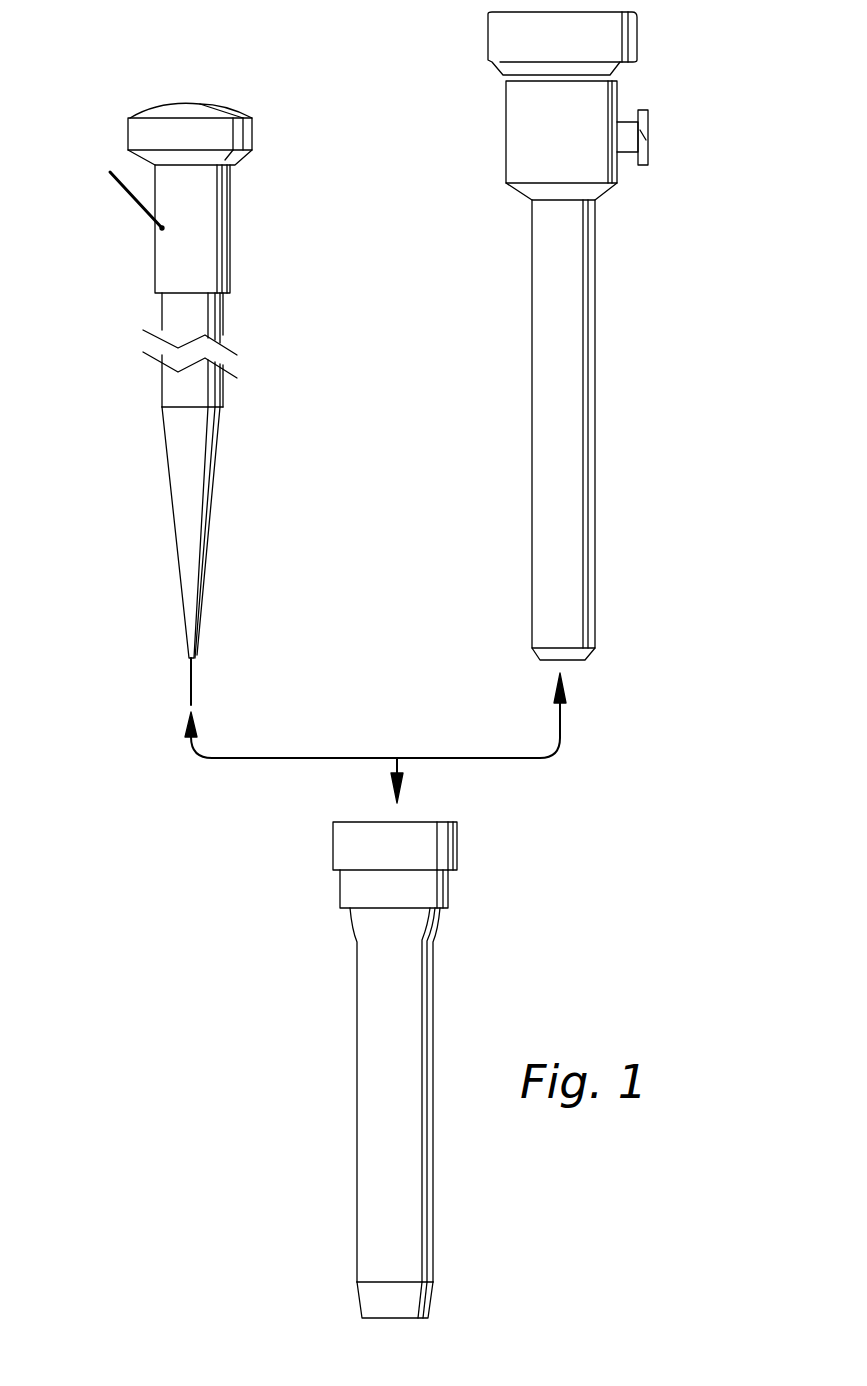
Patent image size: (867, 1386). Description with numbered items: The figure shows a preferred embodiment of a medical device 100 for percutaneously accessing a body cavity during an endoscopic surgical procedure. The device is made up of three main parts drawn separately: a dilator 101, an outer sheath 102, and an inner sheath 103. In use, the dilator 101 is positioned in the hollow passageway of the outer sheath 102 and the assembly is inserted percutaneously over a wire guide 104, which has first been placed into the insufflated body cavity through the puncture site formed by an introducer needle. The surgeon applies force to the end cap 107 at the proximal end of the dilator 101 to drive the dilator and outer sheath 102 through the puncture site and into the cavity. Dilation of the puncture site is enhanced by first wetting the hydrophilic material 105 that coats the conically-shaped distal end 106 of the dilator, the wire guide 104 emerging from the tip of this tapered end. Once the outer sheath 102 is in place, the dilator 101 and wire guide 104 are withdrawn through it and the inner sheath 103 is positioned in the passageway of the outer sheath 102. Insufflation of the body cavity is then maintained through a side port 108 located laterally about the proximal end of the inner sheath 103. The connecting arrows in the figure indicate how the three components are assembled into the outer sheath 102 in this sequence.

The medical device 100 is at (372, 459).
The dilator 101 is at (233, 333).
The outer sheath 102 is at (445, 970).
The inner sheath 103 is at (604, 342).
The wire guide 104 is at (150, 212).
The hydrophilic material 105 is at (177, 532).
The conically-shaped distal end 106 is at (213, 560).
The end cap 107 is at (215, 105).
The side port 108 is at (647, 113).